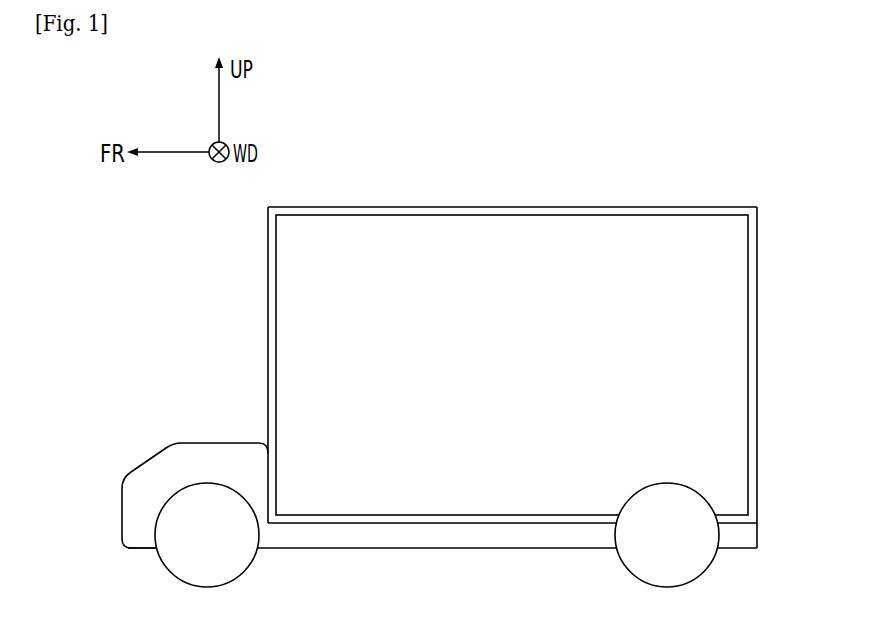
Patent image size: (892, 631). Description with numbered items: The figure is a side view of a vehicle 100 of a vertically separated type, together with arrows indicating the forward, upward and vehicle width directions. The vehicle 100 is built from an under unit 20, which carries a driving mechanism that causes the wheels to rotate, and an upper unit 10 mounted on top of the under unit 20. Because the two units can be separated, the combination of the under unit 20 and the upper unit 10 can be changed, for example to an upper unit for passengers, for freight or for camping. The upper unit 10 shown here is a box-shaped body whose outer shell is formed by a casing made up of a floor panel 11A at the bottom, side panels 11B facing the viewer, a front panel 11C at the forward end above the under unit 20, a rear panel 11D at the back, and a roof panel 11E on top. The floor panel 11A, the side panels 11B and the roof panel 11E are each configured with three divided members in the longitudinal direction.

The vehicle 100 is at (116, 268).
The upper unit 10 is at (416, 190).
The floor panel 11A is at (433, 523).
The side panels 11B is at (617, 232).
The front panel 11C is at (268, 353).
The rear panel 11D is at (758, 357).
The roof panel 11E is at (515, 212).
The under unit 20 is at (213, 448).